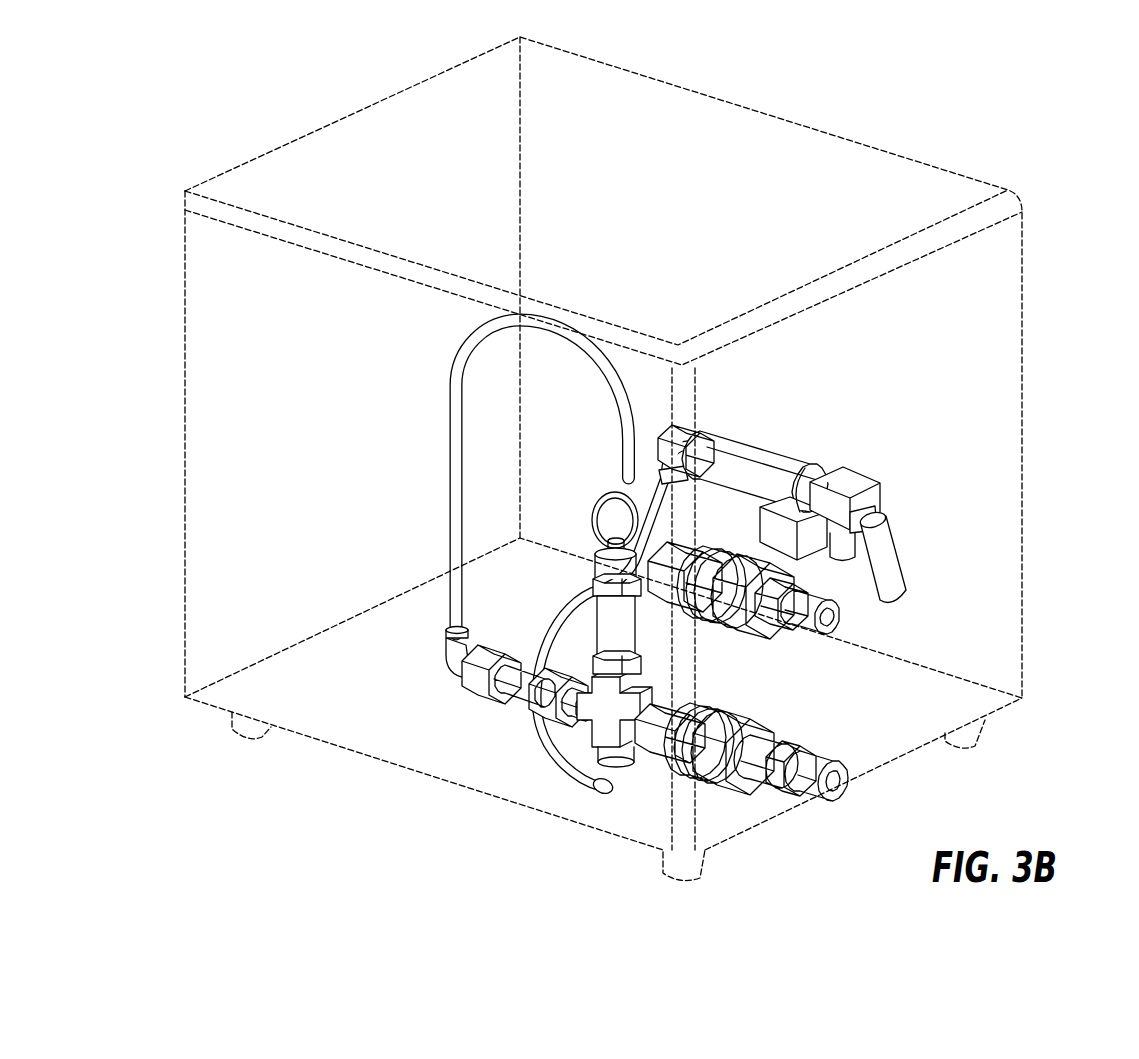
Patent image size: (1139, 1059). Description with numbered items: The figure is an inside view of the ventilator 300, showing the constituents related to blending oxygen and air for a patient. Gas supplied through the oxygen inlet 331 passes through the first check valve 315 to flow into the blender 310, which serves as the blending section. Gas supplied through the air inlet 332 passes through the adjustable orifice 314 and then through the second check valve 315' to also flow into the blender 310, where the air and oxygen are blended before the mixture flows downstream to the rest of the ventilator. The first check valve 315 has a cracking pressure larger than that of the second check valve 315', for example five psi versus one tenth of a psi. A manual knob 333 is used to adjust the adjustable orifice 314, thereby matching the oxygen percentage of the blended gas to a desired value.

The ventilator 300 is at (110, 543).
The blender 310 is at (603, 715).
The first check valve 315 is at (591, 688).
The second check valve 315' is at (827, 314).
The adjustable orifice 314 is at (810, 475).
The manual knob 333 is at (895, 562).
The air inlet 332 is at (842, 622).
The oxygen inlet 331 is at (827, 800).